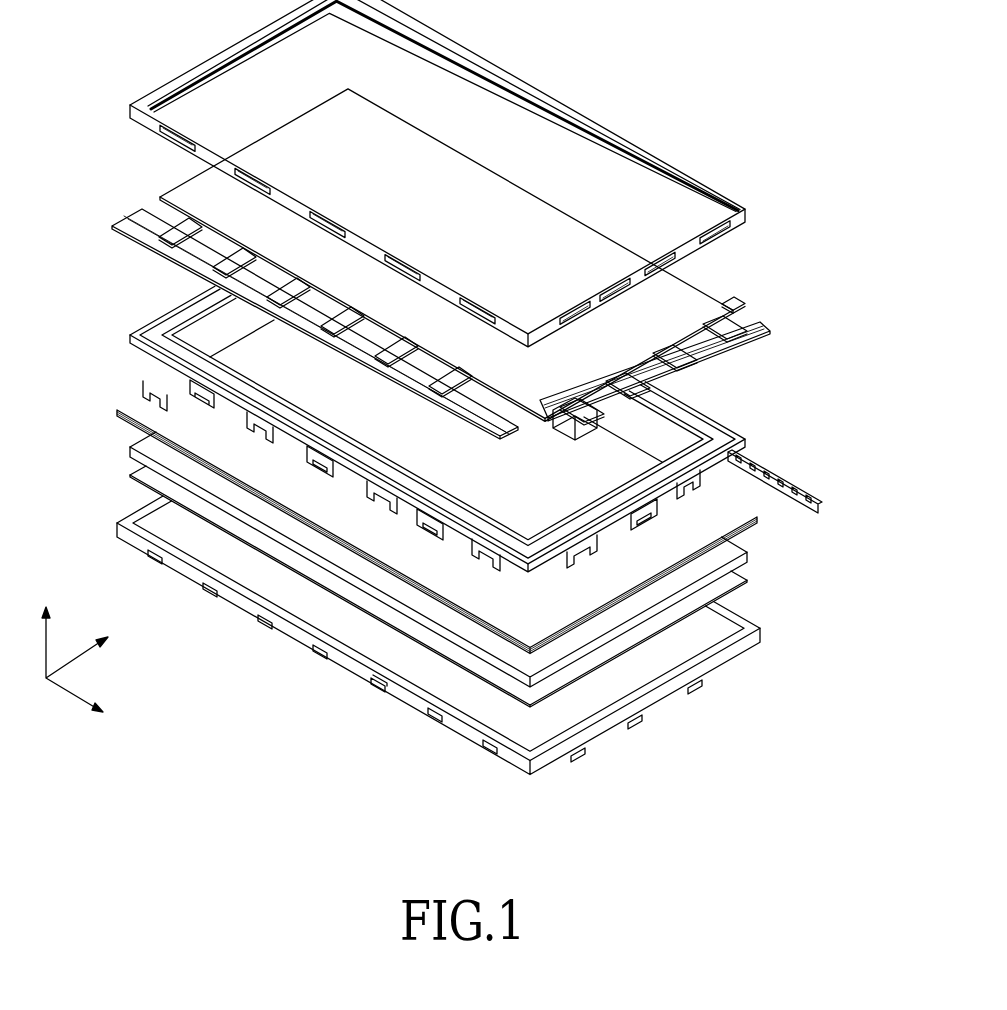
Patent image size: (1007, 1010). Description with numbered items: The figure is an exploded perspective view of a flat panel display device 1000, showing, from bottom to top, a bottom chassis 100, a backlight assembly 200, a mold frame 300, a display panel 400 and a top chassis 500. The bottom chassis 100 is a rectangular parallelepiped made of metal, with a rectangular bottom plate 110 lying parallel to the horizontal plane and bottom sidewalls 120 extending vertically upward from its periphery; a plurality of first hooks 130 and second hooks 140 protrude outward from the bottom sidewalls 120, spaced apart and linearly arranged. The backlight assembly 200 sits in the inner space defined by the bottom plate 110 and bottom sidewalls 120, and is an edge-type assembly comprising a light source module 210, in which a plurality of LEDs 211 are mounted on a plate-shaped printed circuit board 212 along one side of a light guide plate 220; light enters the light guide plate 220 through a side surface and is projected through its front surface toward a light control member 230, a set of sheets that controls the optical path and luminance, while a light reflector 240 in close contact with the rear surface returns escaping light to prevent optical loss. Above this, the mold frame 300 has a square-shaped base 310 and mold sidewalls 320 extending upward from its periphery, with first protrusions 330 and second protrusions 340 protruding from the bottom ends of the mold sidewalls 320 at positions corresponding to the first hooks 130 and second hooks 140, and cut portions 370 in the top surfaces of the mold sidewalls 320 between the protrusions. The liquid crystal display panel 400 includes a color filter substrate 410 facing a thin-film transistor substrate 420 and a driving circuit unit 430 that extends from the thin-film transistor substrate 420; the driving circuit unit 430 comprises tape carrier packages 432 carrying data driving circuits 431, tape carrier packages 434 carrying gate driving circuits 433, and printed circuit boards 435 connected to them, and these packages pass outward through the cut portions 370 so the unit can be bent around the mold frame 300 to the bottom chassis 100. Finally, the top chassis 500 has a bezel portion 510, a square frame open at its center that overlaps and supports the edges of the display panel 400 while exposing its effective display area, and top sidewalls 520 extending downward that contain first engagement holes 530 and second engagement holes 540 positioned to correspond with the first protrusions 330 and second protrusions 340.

The flat panel display device 1000 is at (628, 92).
The bottom chassis 100 is at (118, 524).
The bottom plate 110 is at (650, 665).
The bottom sidewalls 120 is at (757, 650).
The first hooks 130 is at (315, 658).
The second hooks 140 is at (378, 682).
The backlight assembly 200 is at (108, 405).
The light source module 210 is at (770, 470).
The LEDs 211 is at (818, 500).
The printed circuit board 212 is at (800, 476).
The light guide plate 220 is at (752, 555).
The light control member 230 is at (760, 518).
The light reflector 240 is at (752, 585).
The mold frame 300 is at (128, 334).
The base 310 is at (720, 422).
The mold sidewalls 320 is at (700, 395).
The first protrusions 330 is at (312, 460).
The second protrusions 340 is at (372, 490).
The cut portions 370 is at (205, 345).
The display panel 400 is at (128, 197).
The color filter substrate 410 is at (690, 295).
The thin-film transistor substrate 420 is at (733, 310).
The driving circuit unit 430 is at (165, 232).
The data driving circuits 431 is at (403, 398).
The tape carrier packages 432 is at (392, 372).
The gate driving circuits 433 is at (592, 432).
The tape carrier packages 434 is at (548, 428).
The printed circuit boards 435 is at (190, 258).
The top chassis 500 is at (127, 104).
The bezel portion 510 is at (694, 184).
The top sidewalls 520 is at (748, 213).
The first engagement holes 530 is at (330, 215).
The second engagement holes 540 is at (388, 245).